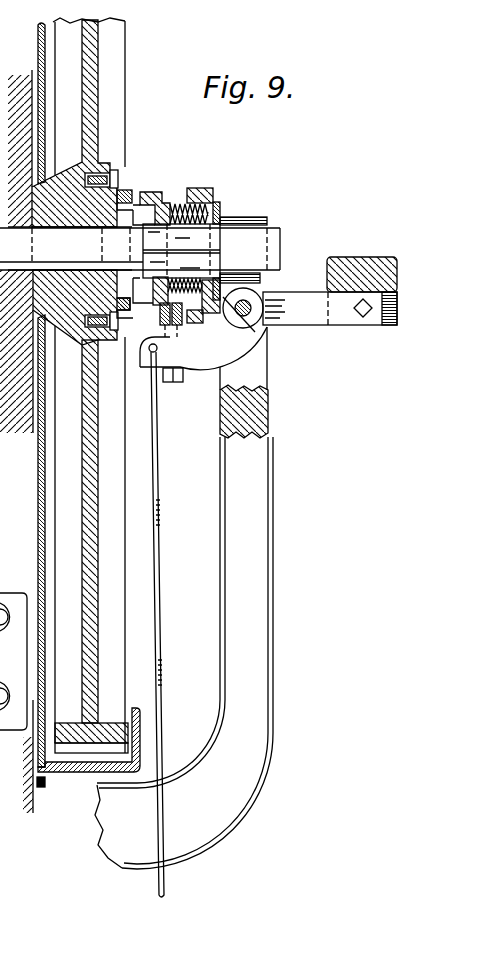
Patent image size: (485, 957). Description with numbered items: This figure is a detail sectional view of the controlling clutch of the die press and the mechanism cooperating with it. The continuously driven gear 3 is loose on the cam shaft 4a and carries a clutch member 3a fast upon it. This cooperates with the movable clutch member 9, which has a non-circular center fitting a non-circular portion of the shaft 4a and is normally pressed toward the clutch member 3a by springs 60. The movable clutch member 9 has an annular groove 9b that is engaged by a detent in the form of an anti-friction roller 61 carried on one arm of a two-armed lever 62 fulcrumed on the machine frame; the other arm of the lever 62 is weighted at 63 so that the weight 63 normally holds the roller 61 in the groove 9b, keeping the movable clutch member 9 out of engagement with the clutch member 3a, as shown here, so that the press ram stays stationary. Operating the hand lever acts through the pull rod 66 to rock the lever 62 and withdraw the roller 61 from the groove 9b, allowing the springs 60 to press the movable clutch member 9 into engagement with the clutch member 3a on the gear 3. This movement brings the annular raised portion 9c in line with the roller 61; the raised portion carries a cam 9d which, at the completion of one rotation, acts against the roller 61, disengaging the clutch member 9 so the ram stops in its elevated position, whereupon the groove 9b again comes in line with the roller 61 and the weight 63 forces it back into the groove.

The gear 3 is at (88, 581).
The clutch member 3a is at (128, 192).
The shaft 4a is at (140, 249).
The movable clutch member 9 is at (150, 192).
The annular groove 9b is at (176, 203).
The annular raised portion 9c is at (198, 188).
The cam 9d is at (200, 318).
The springs 60 is at (217, 205).
The anti-friction roller 61 is at (172, 313).
The two-armed lever 62 is at (208, 362).
The weight 63 is at (355, 270).
The pull rod 66 is at (160, 523).